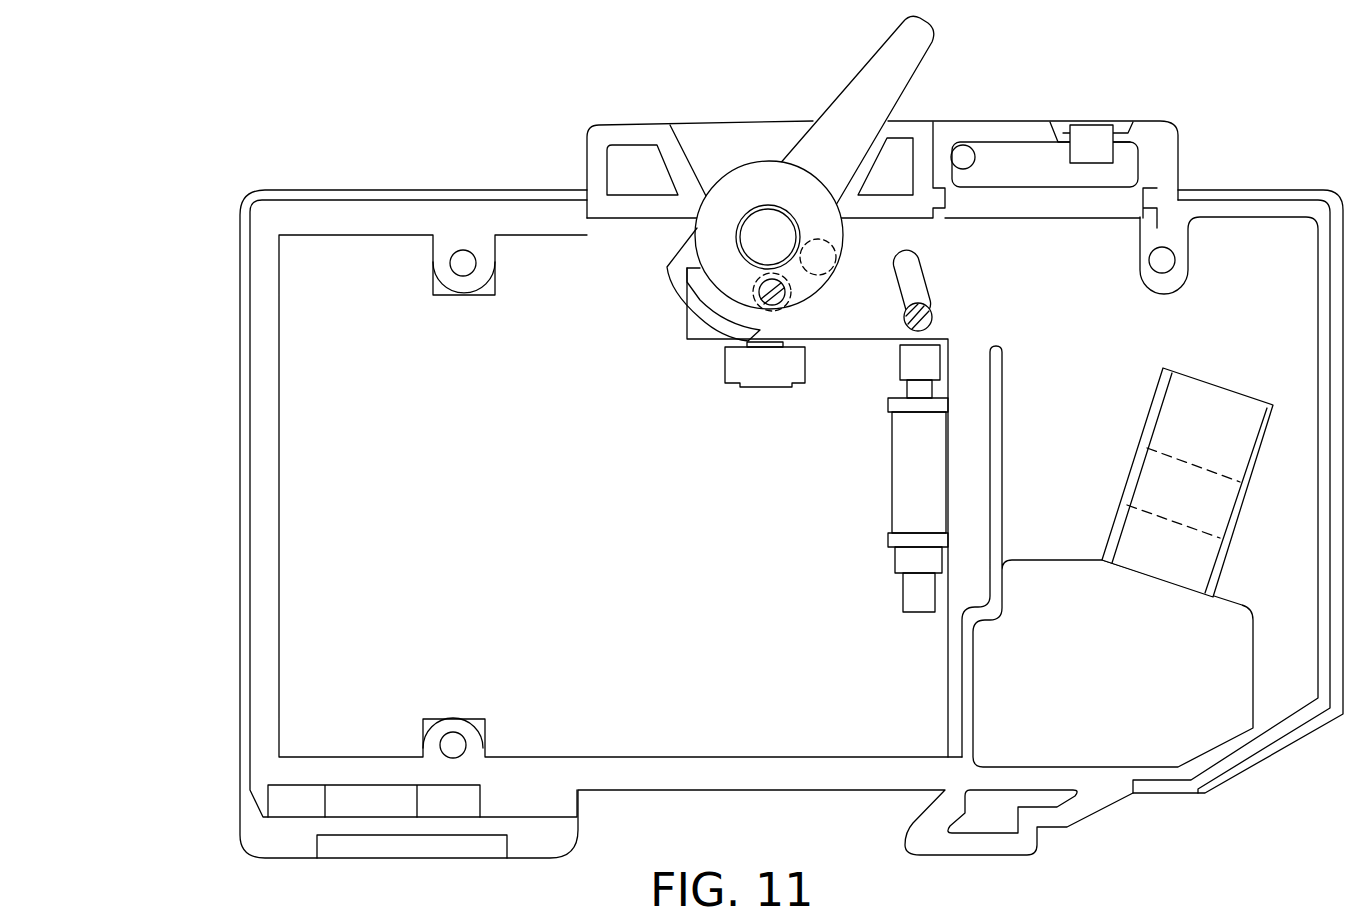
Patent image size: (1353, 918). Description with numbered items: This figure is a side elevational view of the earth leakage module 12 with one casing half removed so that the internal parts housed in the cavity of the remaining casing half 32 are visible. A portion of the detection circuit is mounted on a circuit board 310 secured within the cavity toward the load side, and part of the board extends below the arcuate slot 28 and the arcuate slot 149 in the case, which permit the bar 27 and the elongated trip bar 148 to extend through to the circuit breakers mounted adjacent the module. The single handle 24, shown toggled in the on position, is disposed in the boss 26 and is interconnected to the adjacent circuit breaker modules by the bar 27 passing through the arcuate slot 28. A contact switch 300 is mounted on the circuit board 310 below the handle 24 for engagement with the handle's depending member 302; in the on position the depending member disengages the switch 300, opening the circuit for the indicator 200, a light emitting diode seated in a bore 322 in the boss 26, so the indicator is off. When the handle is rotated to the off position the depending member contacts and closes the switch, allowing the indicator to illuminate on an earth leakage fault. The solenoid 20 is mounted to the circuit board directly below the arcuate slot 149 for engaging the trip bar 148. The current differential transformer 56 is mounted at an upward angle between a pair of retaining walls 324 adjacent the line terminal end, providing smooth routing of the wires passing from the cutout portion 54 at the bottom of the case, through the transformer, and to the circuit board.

The earth leakage module 12 is at (488, 160).
The solenoid 20 is at (910, 473).
The handle 24 is at (865, 87).
The boss 26 is at (628, 123).
The bar 27 is at (785, 297).
The arcuate slot 28 is at (830, 280).
The casing half 32 is at (1260, 190).
The cutout portion 54 is at (1183, 727).
The current differential transformer 56 is at (1220, 387).
The trip bar 148 is at (933, 307).
The arcuate slot 149 is at (913, 275).
The indicator 200 is at (1093, 132).
The contact switch 300 is at (727, 362).
The depending member 302 is at (712, 323).
The circuit board 310 is at (493, 616).
The bore 322 is at (1065, 132).
The retaining walls 324 is at (1128, 470).